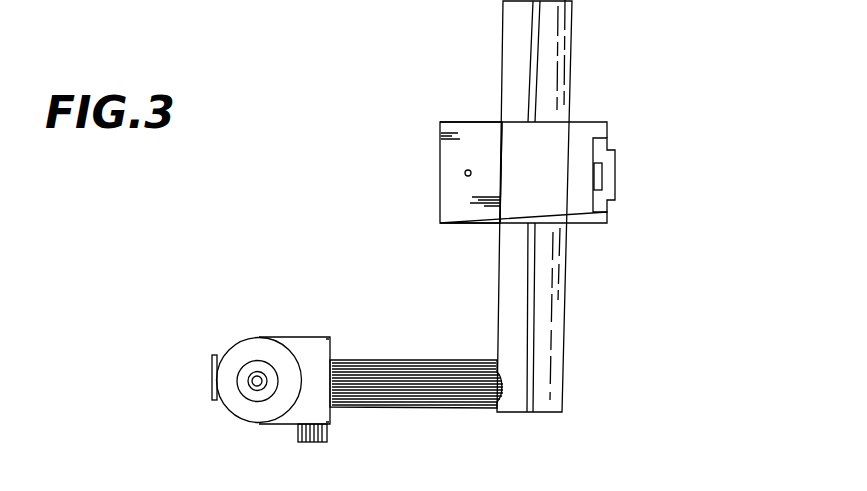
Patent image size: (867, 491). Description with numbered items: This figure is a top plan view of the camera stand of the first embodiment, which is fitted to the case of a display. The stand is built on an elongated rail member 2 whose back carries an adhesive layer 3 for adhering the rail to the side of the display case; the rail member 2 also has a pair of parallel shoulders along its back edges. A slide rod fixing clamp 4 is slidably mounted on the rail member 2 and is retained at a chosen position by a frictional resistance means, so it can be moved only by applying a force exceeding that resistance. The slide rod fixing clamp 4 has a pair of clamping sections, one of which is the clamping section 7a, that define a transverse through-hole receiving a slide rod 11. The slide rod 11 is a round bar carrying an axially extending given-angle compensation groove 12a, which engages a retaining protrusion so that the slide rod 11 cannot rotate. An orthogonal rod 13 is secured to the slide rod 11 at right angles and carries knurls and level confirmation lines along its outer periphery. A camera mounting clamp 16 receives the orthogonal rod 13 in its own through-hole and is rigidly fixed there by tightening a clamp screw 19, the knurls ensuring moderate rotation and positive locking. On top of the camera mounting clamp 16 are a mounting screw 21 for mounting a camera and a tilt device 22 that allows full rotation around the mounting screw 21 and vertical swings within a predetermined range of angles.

The slide rod 11 is at (562, 30).
The given-angle compensation groove 12a is at (533, 302).
The slide rod fixing clamp 4 is at (533, 143).
The clamping section 7a is at (463, 128).
The rail member 2 is at (612, 153).
The adhesive layer 3 is at (616, 172).
The orthogonal rod 13 is at (418, 370).
The camera mounting clamp 16 is at (312, 348).
The tilt device 22 is at (255, 347).
The mounting screw 21 is at (257, 385).
The clamp screw 19 is at (313, 443).